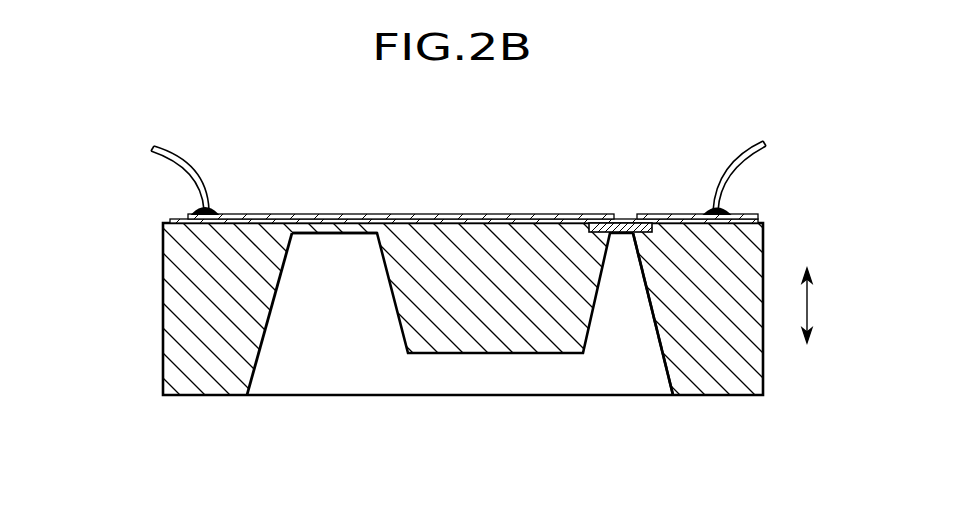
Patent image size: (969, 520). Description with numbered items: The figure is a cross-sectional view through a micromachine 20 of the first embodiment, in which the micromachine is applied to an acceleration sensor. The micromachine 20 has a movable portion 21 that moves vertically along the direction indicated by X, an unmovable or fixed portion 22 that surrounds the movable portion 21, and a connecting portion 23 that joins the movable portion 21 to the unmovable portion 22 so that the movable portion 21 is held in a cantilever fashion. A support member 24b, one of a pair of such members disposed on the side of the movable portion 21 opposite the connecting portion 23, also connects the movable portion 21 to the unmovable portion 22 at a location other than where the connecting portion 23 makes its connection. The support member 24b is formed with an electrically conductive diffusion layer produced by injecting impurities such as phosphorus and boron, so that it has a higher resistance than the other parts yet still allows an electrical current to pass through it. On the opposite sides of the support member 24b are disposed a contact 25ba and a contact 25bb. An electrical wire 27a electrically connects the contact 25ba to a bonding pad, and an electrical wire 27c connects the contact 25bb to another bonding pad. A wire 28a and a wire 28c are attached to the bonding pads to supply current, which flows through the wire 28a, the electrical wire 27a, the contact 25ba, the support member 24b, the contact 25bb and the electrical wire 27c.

The micromachine 20 is at (120, 249).
The movable portion 21 is at (473, 340).
The unmovable portion 22 is at (215, 396).
The connecting portion 23 is at (337, 234).
The support member 24b is at (617, 234).
The contact 25ba is at (612, 216).
The contact 25bb is at (625, 223).
The electrical wire 27a is at (310, 214).
The electrical wire 27c is at (673, 214).
The wire 28a is at (180, 159).
The wire 28c is at (747, 155).
The direction of vertical movement X is at (822, 305).